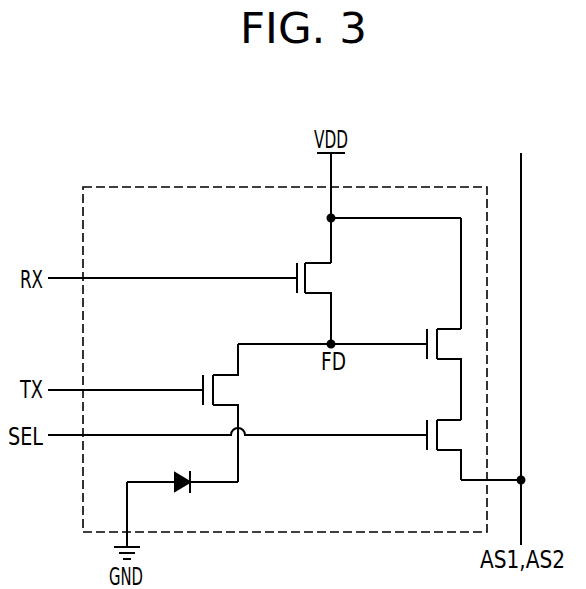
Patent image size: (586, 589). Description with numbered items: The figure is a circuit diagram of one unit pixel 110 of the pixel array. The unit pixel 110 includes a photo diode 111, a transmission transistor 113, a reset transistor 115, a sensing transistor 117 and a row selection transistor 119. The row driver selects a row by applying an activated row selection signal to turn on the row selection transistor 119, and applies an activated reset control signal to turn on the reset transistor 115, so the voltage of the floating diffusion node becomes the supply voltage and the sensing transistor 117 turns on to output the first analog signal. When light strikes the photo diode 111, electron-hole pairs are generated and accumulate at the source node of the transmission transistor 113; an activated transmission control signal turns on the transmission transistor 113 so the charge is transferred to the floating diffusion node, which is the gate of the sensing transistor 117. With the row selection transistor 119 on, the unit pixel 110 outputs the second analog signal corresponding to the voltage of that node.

The unit pixel 110 is at (148, 187).
The photo diode 111 is at (185, 490).
The transmission transistor 113 is at (231, 413).
The reset transistor 115 is at (324, 303).
The sensing transistor 117 is at (454, 374).
The row selection transistor 119 is at (454, 450).